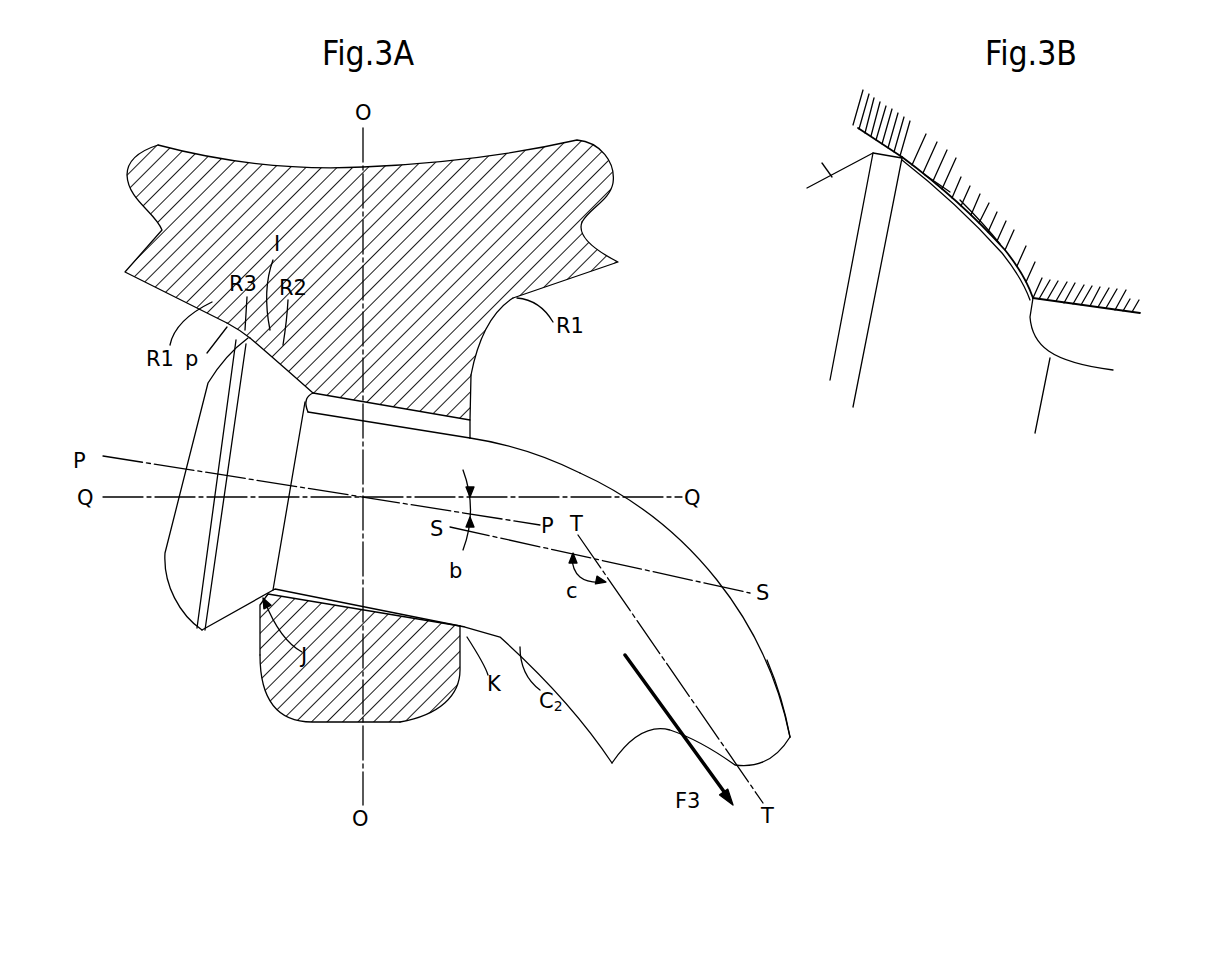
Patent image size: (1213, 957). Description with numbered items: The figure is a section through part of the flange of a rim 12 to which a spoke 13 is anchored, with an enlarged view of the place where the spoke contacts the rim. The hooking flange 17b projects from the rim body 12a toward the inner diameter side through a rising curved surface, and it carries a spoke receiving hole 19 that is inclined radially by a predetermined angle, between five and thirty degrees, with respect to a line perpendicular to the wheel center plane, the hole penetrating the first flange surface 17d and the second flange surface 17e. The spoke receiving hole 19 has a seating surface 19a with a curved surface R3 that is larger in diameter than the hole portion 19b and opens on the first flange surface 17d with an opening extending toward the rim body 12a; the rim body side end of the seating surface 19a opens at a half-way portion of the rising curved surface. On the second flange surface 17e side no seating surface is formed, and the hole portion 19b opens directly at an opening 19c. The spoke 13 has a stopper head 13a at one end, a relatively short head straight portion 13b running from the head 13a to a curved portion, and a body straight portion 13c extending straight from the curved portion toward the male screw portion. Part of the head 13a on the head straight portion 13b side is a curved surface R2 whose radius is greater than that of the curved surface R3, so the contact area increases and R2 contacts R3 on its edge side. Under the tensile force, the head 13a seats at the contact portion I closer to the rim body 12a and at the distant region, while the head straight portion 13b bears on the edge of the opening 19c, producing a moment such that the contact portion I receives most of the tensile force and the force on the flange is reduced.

In FIG. 3A, the rim 12 is at (495, 150).
In FIG. 3A, the rim body 12a is at (553, 243).
In FIG. 3A, the spoke 13 is at (705, 548).
In FIG. 3A, the stopper head 13a is at (178, 562).
In FIG. 3B, the stopper head 13a is at (822, 214).
In FIG. 3A, the head straight portion 13b is at (453, 458).
In FIG. 3B, the head straight portion 13b is at (1077, 377).
In FIG. 3A, the body straight portion 13c is at (763, 698).
In FIG. 3A, the hooking flange 17b is at (440, 703).
In FIG. 3A, the first flange surface 17d is at (258, 652).
In FIG. 3A, the second flange surface 17e is at (460, 677).
In FIG. 3A, the spoke receiving hole 19 is at (343, 407).
In FIG. 3A, the seating surface 19a is at (300, 388).
In FIG. 3B, the seating surface 19a is at (1008, 267).
In FIG. 3A, the hole portion 19b is at (398, 412).
In FIG. 3B, the hole portion 19b is at (1055, 300).
In FIG. 3A, the opening 19c is at (472, 425).
In FIG. 3B, the head curved surface R2 is at (982, 233).
In FIG. 3B, the seating surface curved surface R3 is at (860, 135).
In FIG. 3B, the contact portion I is at (937, 160).